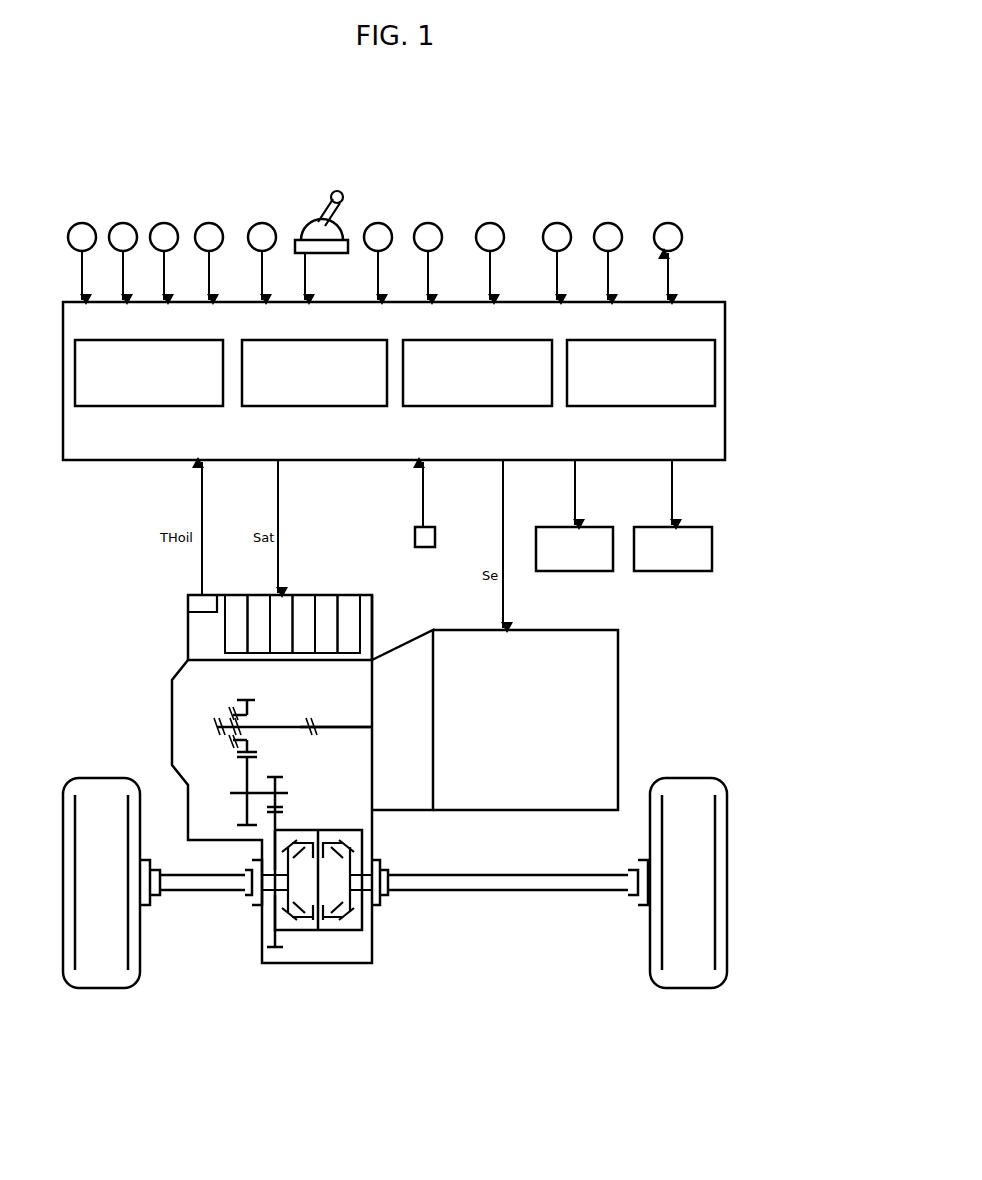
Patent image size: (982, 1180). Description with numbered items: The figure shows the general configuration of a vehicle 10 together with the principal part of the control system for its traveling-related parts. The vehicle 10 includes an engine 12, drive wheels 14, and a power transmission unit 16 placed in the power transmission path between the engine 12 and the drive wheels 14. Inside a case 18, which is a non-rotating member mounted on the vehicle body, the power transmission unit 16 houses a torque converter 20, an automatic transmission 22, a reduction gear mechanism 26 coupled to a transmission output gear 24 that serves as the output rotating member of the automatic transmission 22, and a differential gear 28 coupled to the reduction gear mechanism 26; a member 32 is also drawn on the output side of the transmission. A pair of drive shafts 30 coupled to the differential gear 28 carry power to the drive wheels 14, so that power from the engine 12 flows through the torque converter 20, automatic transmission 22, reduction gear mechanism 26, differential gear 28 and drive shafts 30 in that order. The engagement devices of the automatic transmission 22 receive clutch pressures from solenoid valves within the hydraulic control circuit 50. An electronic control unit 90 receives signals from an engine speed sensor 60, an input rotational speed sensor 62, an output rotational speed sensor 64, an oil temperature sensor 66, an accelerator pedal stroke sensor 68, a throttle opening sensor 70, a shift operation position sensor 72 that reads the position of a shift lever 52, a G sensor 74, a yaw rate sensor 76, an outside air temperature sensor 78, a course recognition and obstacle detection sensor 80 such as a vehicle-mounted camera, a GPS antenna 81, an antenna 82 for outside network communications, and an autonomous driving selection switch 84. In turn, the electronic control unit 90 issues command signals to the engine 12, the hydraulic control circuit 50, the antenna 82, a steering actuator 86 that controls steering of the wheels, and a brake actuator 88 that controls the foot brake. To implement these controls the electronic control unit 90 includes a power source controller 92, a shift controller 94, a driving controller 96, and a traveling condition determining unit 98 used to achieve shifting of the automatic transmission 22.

The vehicle 10 is at (676, 170).
The engine 12 is at (518, 641).
The drive wheels 14 is at (95, 790).
The power transmission unit 16 is at (152, 620).
The case 18 is at (178, 668).
The torque converter 20 is at (402, 650).
The automatic transmission 22 is at (192, 732).
The transmission output gear 24 is at (243, 702).
The reduction gear mechanism 26 is at (296, 780).
The differential gear 28 is at (330, 945).
The drive shafts 30 is at (176, 885).
The output shaft 32 is at (362, 722).
The hydraulic control circuit 50 is at (280, 616).
The shift lever 52 is at (326, 210).
The engine speed sensor 60 is at (82, 230).
The input rotational speed sensor 62 is at (123, 230).
The output rotational speed sensor 64 is at (164, 230).
The oil temperature sensor 66 is at (206, 600).
The accelerator pedal stroke sensor 68 is at (209, 230).
The throttle opening sensor 70 is at (262, 230).
The shift operation position sensor 72 is at (298, 244).
The G sensor 74 is at (378, 230).
The yaw rate sensor 76 is at (428, 230).
The outside air temperature sensor 78 is at (490, 230).
The course recognition and obstacle detection sensor 80 is at (557, 230).
The GPS antenna 81 is at (608, 230).
The antenna for outside network communications 82 is at (668, 230).
The autonomous driving selection switch 84 is at (424, 549).
The steering actuator 86 is at (562, 565).
The brake actuator 88 is at (661, 565).
The electronic control unit 90 is at (320, 460).
The power source controller 92 is at (180, 345).
The shift controller 94 is at (343, 345).
The driving controller 96 is at (507, 345).
The traveling condition determining unit 98 is at (670, 345).